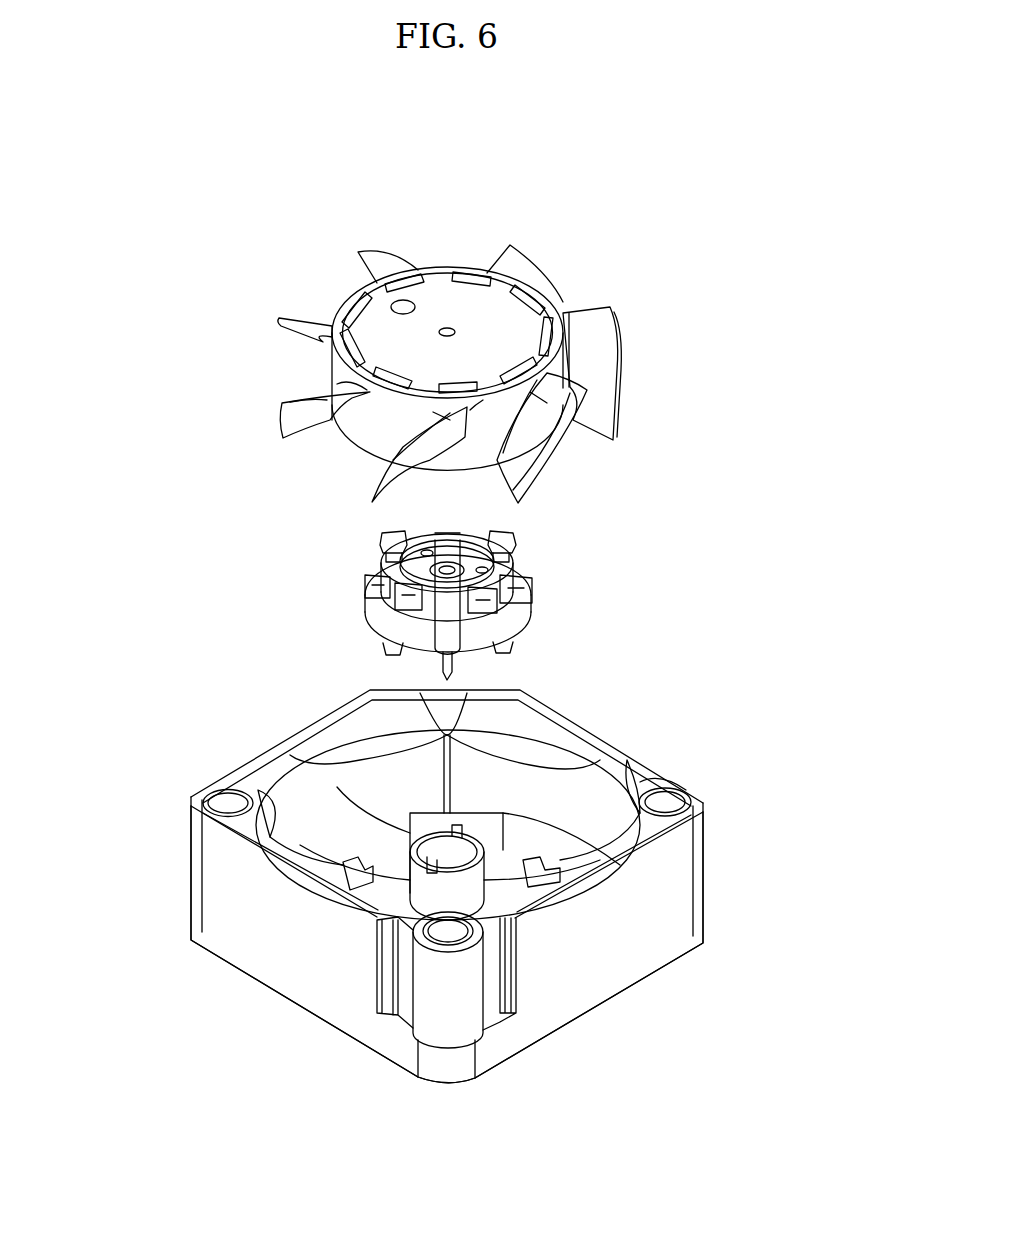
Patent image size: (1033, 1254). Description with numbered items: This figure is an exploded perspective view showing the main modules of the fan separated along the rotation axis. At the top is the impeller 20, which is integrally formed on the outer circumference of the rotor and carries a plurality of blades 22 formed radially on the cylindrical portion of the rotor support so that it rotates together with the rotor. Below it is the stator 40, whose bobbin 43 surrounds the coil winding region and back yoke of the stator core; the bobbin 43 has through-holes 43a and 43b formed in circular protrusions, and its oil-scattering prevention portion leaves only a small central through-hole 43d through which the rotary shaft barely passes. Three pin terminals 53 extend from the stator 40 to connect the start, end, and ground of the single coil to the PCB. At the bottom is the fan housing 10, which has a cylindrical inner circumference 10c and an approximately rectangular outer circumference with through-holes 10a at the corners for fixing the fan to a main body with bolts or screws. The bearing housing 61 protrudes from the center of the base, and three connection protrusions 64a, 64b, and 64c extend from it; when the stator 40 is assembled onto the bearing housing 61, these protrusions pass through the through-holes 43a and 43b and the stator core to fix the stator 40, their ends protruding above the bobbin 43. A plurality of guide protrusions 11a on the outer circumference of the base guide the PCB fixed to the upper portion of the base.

The impeller 20 is at (578, 270).
The blade 22 is at (614, 376).
The stator 40 is at (457, 595).
The bobbin 43 is at (528, 603).
The through-hole 43a is at (520, 575).
The through-hole 43b is at (380, 545).
The through-hole 43d is at (370, 600).
The pin terminal 53 is at (438, 672).
The fan housing 10 is at (446, 876).
The through-hole 10a is at (703, 805).
The cylindrical inner circumference 10c is at (621, 802).
The guide protrusion 11a is at (300, 860).
The bearing housing 61 is at (530, 930).
The connection protrusion 64a is at (270, 833).
The connection protrusion 64b is at (622, 873).
The connection protrusion 64c is at (322, 775).